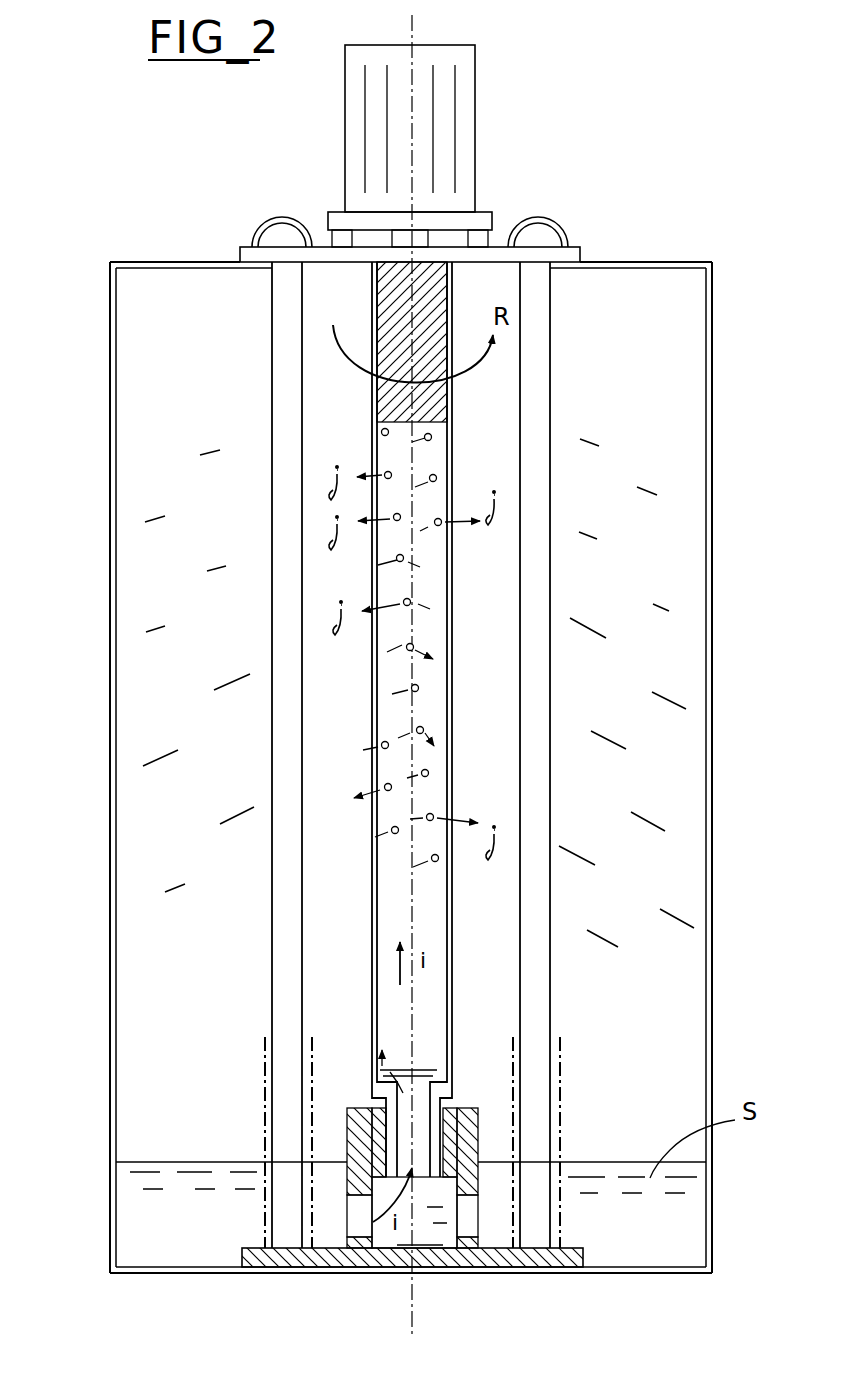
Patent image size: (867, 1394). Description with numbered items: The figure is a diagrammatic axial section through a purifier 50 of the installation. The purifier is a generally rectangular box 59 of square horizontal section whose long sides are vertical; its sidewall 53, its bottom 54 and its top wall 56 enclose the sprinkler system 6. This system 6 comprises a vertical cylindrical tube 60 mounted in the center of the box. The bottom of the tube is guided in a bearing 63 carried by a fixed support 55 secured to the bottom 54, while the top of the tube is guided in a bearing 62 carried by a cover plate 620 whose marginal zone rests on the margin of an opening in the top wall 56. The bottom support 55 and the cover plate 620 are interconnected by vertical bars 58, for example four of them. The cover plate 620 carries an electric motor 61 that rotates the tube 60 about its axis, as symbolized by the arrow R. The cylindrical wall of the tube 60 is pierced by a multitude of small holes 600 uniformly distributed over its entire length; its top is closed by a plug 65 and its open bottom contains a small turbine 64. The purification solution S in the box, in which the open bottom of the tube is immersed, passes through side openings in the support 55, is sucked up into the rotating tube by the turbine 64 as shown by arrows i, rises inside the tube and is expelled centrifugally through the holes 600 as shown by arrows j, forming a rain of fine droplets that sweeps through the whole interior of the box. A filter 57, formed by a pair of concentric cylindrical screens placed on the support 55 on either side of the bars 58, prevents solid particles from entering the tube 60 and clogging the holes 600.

The purifier 50 is at (122, 222).
The sidewall 53 is at (110, 810).
The bottom 54 is at (150, 1273).
The fixed support 55 is at (443, 1257).
The top wall 56 is at (655, 262).
The filter 57 is at (312, 1115).
The vertical bars 58 is at (537, 422).
The box 59 is at (712, 667).
The vertical cylindrical tube 60 is at (375, 965).
The holes 600 is at (400, 519).
The electric motor 61 is at (466, 117).
The bearing 62 is at (453, 237).
The cover plate 620 is at (543, 247).
The bearing 63 is at (470, 1143).
The turbine 64 is at (417, 1070).
The plug 65 is at (430, 293).
The sprinkler system 6 is at (256, 383).